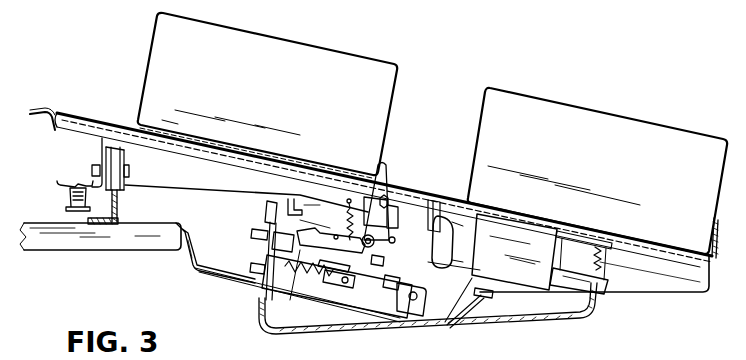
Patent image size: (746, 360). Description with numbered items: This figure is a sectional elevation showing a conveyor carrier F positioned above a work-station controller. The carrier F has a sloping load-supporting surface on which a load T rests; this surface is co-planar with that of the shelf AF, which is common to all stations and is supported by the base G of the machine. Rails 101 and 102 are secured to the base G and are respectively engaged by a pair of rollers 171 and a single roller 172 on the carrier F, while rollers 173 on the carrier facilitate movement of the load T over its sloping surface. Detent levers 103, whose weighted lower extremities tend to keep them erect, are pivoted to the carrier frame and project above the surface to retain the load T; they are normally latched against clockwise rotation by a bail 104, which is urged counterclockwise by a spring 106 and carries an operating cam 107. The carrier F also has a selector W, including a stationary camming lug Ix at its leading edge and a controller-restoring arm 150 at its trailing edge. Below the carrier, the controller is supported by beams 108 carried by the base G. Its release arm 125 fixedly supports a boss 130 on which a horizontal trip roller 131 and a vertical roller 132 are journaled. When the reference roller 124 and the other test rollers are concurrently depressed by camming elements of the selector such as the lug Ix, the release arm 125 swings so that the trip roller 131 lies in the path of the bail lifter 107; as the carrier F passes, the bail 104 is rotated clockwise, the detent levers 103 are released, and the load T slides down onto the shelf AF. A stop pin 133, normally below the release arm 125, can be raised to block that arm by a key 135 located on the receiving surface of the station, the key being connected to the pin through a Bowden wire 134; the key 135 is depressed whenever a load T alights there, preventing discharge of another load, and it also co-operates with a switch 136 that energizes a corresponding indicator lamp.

The rail 101 is at (117, 205).
The rail 102 is at (453, 266).
The detent lever 103 is at (388, 172).
The bail 104 is at (337, 284).
The spring 106 is at (342, 221).
The operating cam 107 is at (269, 221).
The beam 108 is at (212, 268).
The reference roller 124 is at (380, 300).
The release arm 125 is at (250, 265).
The boss 130 is at (252, 233).
The trip roller 131 is at (272, 243).
The vertical roller 132 is at (266, 206).
The stop pin 133 is at (262, 280).
The Bowden wire 134 is at (460, 328).
The key 135 is at (592, 234).
The switch 136 is at (523, 277).
The controller-restoring arm 150 is at (290, 199).
The rollers 171 is at (123, 152).
The roller 172 is at (440, 200).
The rollers 173 is at (170, 138).
The load T is at (269, 105).
The carrier F is at (193, 171).
The base G is at (100, 244).
The selector W is at (387, 212).
The stationary camming lug Ix is at (376, 256).
The shelf AF is at (650, 252).